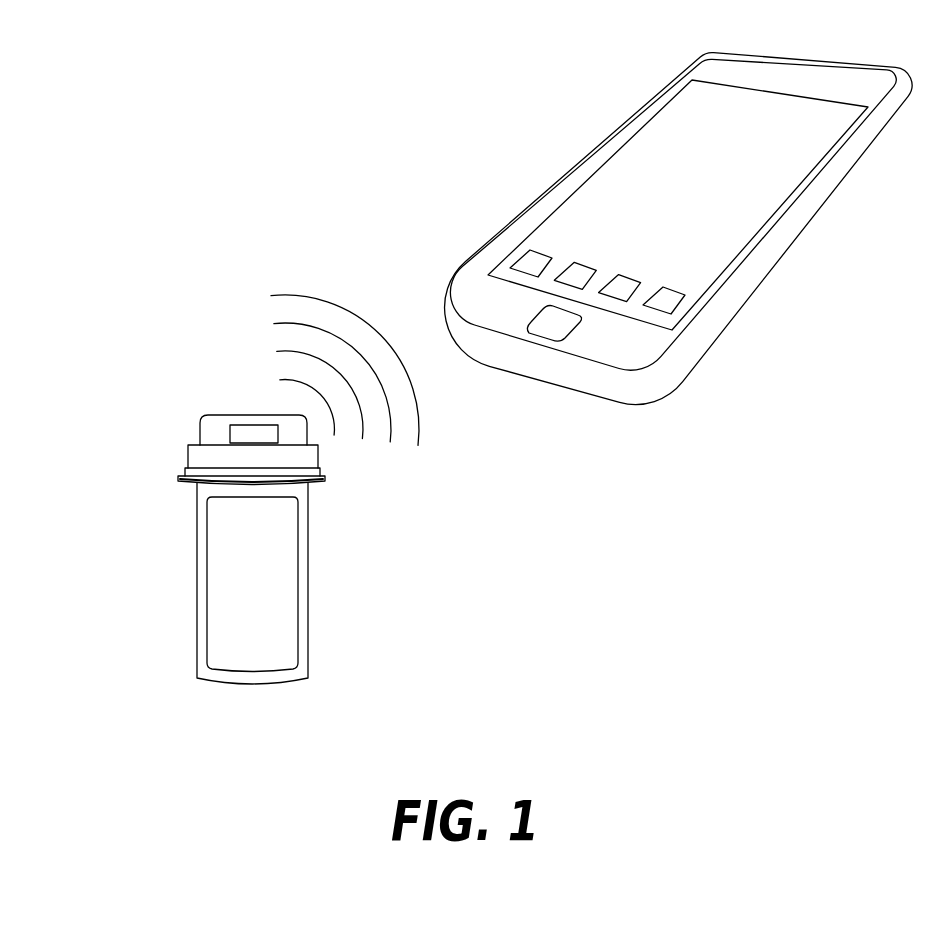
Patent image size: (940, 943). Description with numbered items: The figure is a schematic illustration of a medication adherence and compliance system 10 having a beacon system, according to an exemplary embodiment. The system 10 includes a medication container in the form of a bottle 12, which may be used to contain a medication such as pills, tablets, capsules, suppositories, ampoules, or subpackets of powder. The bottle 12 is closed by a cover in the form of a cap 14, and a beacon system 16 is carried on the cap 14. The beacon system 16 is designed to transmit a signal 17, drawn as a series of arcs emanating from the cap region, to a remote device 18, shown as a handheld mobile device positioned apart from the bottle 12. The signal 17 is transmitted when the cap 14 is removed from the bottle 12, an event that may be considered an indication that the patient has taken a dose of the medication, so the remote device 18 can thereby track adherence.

The medication adherence and compliance system 10 is at (198, 253).
The bottle 12 is at (197, 543).
The cap 14 is at (188, 457).
The beacon system 16 is at (246, 425).
The signal 17 is at (418, 427).
The remote device 18 is at (597, 101).